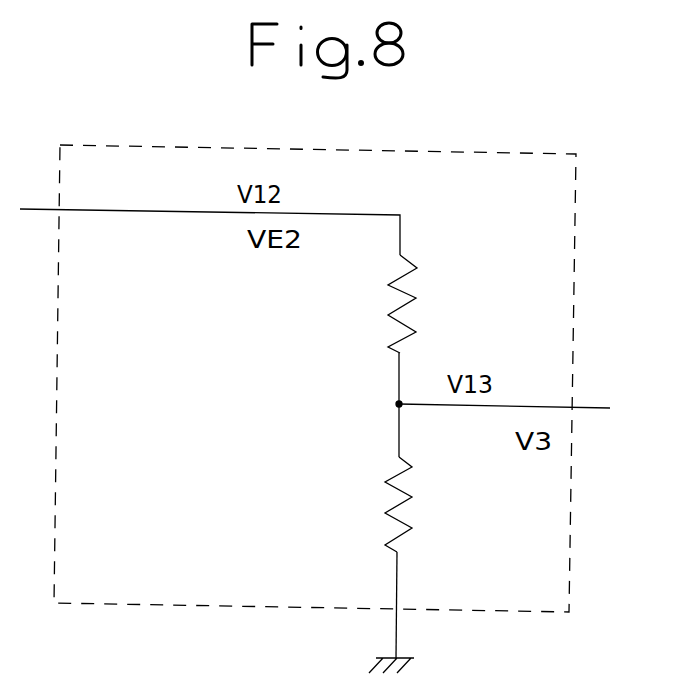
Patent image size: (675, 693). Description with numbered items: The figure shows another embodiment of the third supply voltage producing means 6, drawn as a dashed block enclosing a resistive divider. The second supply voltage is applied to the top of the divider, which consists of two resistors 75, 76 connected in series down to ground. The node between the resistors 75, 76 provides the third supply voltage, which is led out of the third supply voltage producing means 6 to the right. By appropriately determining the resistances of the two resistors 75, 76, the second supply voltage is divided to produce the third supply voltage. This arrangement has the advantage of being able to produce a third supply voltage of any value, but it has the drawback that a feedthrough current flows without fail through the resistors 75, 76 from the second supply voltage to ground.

The third supply voltage producing means 6 is at (168, 612).
The resistor 75 is at (408, 294).
The resistor 76 is at (404, 470).